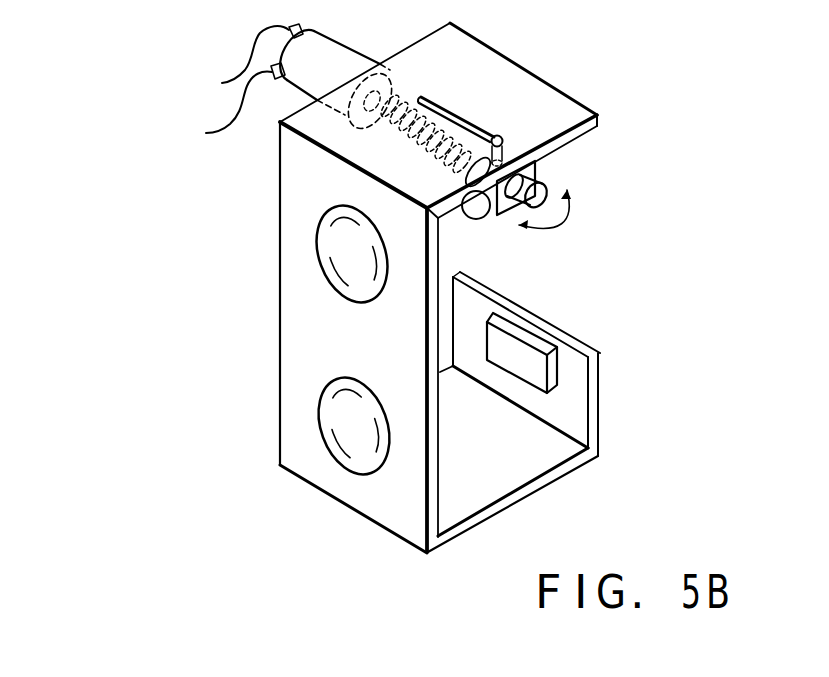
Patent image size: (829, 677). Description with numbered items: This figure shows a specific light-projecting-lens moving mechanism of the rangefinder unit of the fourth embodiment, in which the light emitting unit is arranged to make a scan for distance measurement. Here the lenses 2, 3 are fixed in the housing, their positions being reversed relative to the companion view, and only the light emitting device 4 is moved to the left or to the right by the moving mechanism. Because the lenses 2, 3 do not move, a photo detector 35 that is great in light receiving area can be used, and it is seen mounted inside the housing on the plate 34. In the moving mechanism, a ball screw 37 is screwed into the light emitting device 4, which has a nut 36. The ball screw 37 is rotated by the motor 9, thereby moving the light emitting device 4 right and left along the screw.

The lens 2 is at (318, 251).
The lens 3 is at (335, 447).
The light emitting device 4 is at (438, 196).
The motor 9 is at (352, 45).
The bottom plate 34 is at (567, 471).
The photo detector 35 is at (560, 369).
The nut 36 is at (535, 169).
The ball screw 37 is at (406, 93).